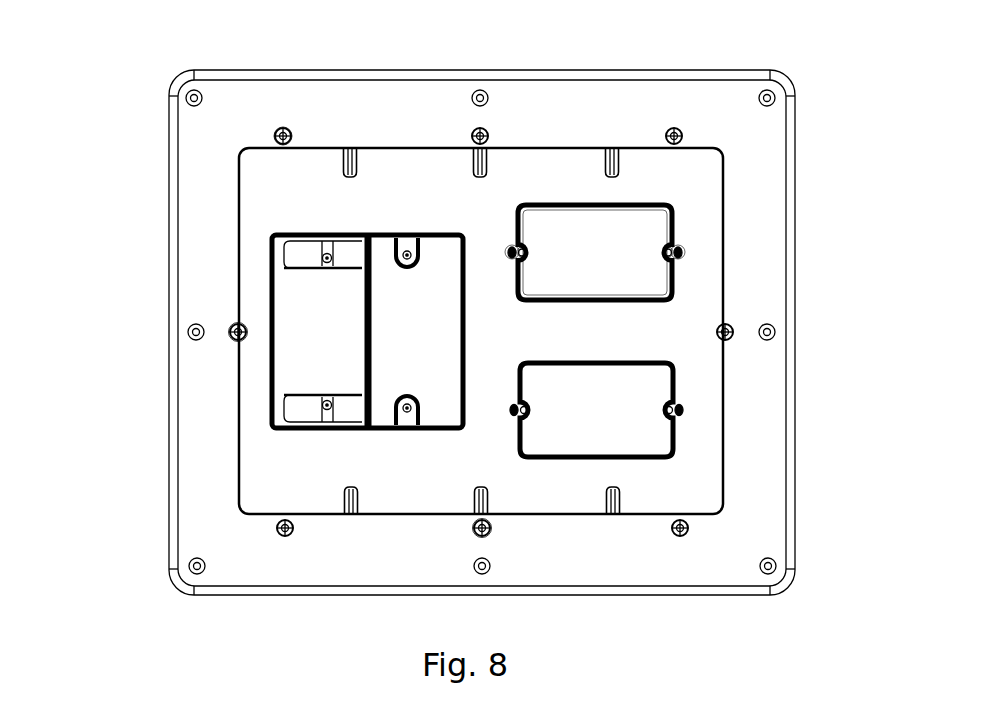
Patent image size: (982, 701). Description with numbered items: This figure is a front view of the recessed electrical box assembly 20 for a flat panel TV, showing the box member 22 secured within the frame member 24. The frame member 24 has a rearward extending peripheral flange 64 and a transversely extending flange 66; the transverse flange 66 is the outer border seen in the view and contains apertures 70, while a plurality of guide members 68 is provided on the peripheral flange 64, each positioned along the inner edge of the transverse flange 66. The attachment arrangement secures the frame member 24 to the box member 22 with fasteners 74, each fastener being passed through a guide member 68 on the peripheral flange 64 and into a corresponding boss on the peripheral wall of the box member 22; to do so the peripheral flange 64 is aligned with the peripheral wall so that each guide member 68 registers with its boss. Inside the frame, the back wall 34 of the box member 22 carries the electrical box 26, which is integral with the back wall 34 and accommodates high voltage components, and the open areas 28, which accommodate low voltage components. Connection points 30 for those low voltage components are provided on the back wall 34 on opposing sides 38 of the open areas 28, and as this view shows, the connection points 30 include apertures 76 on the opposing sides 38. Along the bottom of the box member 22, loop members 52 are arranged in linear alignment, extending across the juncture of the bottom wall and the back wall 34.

The electrical box assembly 20 is at (128, 150).
The box member 22 is at (708, 470).
The frame member 24 is at (795, 536).
The electrical box 26 is at (312, 343).
The open areas 28 is at (398, 343).
The connection points 30 is at (506, 270).
The back wall 34 is at (407, 208).
The opposing sides 38 is at (516, 229).
The loop members 52 is at (358, 494).
The peripheral flange 64 is at (284, 146).
The transverse flange 66 is at (738, 158).
The guide members 68 is at (226, 318).
The apertures 70 is at (483, 90).
The fasteners 74 is at (284, 127).
The apertures 76 is at (516, 246).